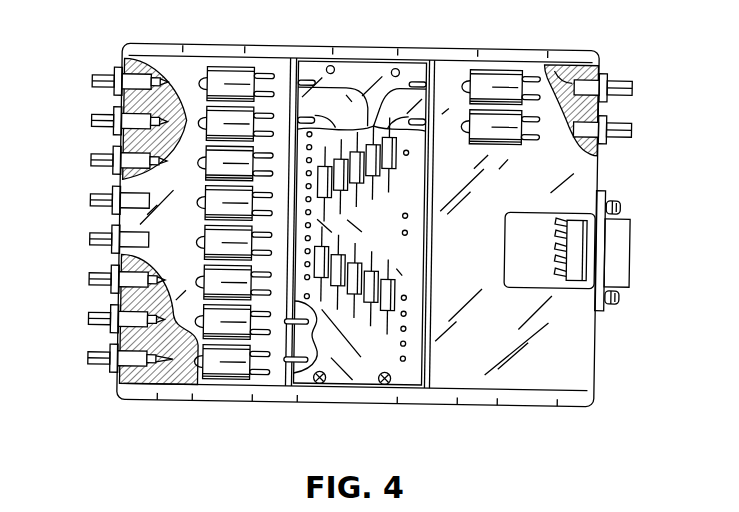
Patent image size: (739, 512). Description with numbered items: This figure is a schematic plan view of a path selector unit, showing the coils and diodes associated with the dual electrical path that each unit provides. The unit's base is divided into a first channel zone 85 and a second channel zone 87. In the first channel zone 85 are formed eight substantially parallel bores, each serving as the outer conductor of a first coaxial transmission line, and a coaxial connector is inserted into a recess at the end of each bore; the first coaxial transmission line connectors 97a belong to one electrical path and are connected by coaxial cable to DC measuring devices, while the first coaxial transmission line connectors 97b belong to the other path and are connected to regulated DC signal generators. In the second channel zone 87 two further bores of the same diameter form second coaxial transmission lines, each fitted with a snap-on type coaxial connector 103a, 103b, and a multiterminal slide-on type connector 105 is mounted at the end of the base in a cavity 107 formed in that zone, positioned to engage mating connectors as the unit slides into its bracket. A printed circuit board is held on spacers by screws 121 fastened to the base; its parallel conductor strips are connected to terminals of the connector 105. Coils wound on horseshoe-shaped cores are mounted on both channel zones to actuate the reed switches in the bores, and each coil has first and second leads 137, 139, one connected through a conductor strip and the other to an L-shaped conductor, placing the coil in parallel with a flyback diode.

The first channel zone 85 is at (146, 60).
The second channel zone 87 is at (467, 382).
The first coaxial transmission line connector 97a is at (112, 75).
The first coaxial transmission line connector 97b is at (103, 233).
The snap-on type coaxial connector 103a is at (622, 80).
The snap-on type coaxial connector 103b is at (626, 122).
The multiterminal slide-on type connector 105 is at (622, 215).
The cavity 107 is at (526, 222).
The screws 121 is at (327, 386).
The first lead 137 is at (528, 74).
The second lead 139 is at (548, 74).